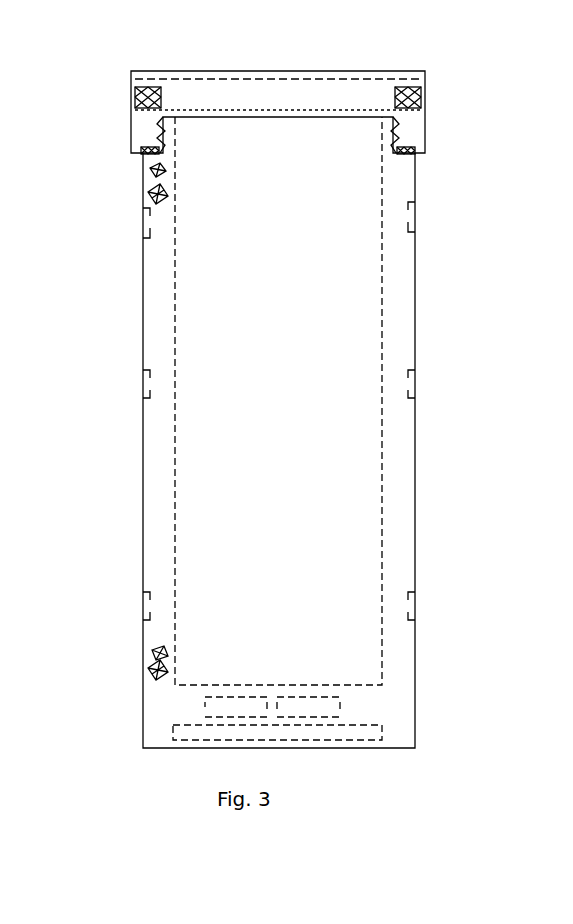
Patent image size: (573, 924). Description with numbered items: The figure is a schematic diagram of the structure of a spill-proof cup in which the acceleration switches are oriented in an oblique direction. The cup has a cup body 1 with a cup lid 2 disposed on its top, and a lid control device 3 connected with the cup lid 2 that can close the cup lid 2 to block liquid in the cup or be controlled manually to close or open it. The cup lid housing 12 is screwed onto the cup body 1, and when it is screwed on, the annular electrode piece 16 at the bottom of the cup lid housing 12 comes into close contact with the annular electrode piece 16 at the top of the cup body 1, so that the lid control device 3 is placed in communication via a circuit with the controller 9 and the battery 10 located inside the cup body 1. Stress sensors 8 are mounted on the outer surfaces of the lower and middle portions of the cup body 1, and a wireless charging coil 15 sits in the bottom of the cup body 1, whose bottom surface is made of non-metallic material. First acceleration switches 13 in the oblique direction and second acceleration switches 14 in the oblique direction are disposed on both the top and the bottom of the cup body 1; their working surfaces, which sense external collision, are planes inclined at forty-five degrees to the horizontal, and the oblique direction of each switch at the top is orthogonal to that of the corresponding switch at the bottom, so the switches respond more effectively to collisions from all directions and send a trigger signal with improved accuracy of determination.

The cup body 1 is at (143, 280).
The cup lid 2 is at (208, 98).
The lid control device 3 is at (135, 101).
The stress sensors 8 is at (143, 225).
The controller 9 is at (205, 707).
The battery 10 is at (340, 707).
The cup lid housing 12 is at (305, 72).
The first acceleration switch in an oblique direction 13 is at (143, 168).
The second acceleration switch in the oblique direction 14 is at (143, 201).
The wireless charging coil 15 is at (193, 733).
The annular electrode piece 16 is at (150, 150).